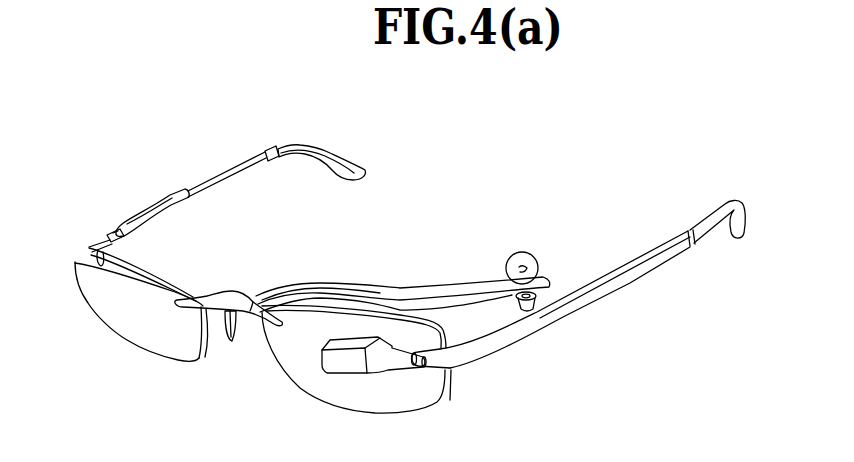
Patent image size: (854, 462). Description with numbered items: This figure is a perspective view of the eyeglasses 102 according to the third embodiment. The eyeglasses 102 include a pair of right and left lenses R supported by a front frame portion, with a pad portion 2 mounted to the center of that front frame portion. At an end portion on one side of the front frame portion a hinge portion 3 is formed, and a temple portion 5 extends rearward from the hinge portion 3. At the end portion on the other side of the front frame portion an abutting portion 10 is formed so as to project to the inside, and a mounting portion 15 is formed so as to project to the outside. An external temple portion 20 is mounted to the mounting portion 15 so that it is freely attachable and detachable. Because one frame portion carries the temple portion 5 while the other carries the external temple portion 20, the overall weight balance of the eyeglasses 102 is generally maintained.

The eyeglasses 102 is at (606, 160).
The pad portion 2 is at (227, 338).
The hinge portion 3 is at (107, 243).
The temple portion 5 is at (247, 160).
The lenses R is at (148, 340).
The abutting portion 10 is at (547, 262).
The mounting portion 15 is at (528, 312).
The external temple portion 20 is at (630, 278).